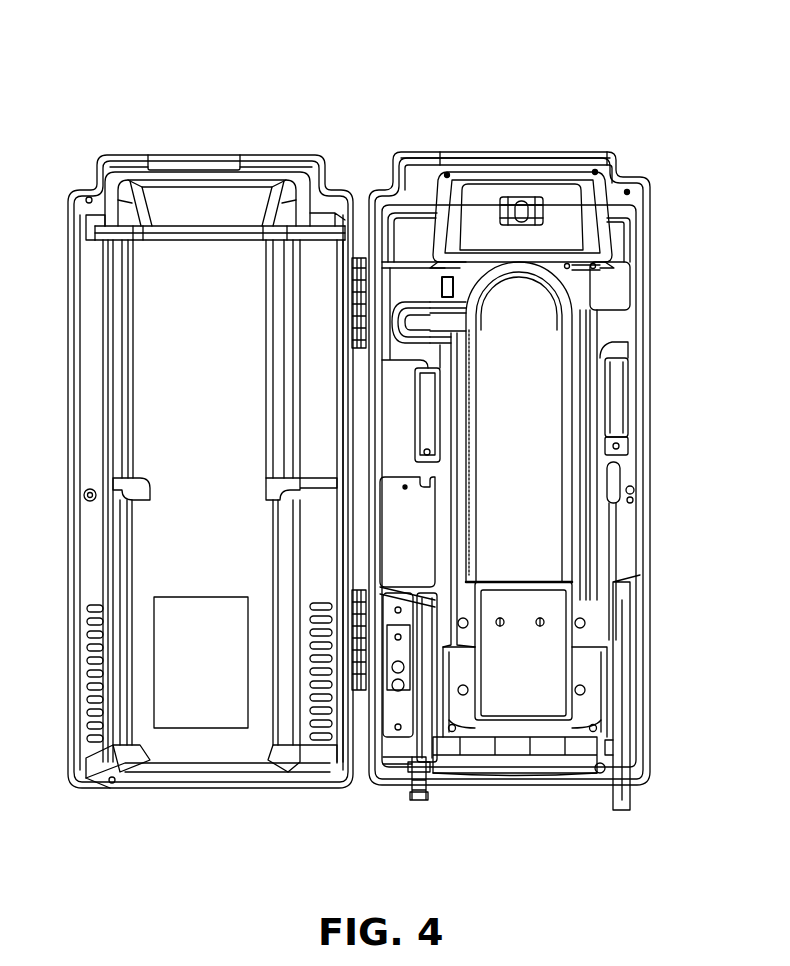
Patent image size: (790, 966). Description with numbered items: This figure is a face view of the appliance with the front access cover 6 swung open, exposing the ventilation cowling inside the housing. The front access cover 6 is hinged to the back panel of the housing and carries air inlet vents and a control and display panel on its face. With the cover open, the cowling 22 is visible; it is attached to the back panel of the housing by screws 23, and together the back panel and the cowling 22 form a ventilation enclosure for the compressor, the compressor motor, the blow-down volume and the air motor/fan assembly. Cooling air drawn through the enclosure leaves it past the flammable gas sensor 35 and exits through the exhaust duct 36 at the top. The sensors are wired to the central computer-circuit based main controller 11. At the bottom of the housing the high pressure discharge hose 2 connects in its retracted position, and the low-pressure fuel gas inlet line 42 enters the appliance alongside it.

The front access cover 6 is at (176, 322).
The main controller 11 is at (190, 660).
The exhaust duct 36 is at (500, 153).
The flammable gas sensor 35 is at (523, 213).
The screws 23 is at (595, 172).
The cowling 22 is at (532, 522).
The high pressure discharge hose 2 is at (415, 800).
The low-pressure fuel gas inlet line 42 is at (633, 795).